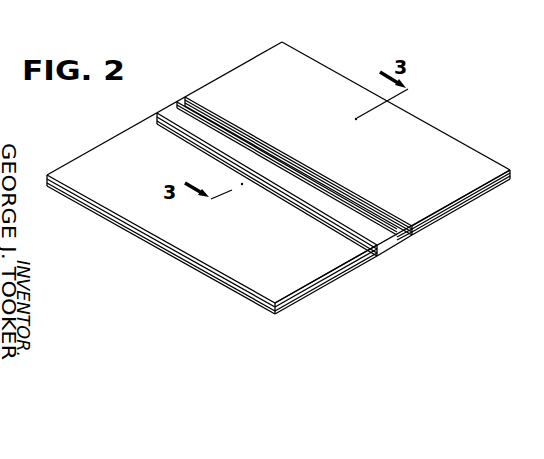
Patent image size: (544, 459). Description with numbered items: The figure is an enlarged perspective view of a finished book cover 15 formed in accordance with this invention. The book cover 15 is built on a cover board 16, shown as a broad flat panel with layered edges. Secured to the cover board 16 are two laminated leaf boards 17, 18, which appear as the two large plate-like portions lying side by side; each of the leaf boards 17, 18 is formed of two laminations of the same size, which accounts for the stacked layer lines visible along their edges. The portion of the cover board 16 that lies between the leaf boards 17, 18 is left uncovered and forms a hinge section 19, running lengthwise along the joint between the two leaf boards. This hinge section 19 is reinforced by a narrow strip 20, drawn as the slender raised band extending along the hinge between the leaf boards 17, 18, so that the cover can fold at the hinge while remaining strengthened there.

The book cover 15 is at (447, 122).
The cover board 16 is at (353, 276).
The leaf board 17 is at (247, 284).
The leaf board 18 is at (474, 158).
The hinge section 19 is at (406, 239).
The narrow strip 20 is at (359, 220).